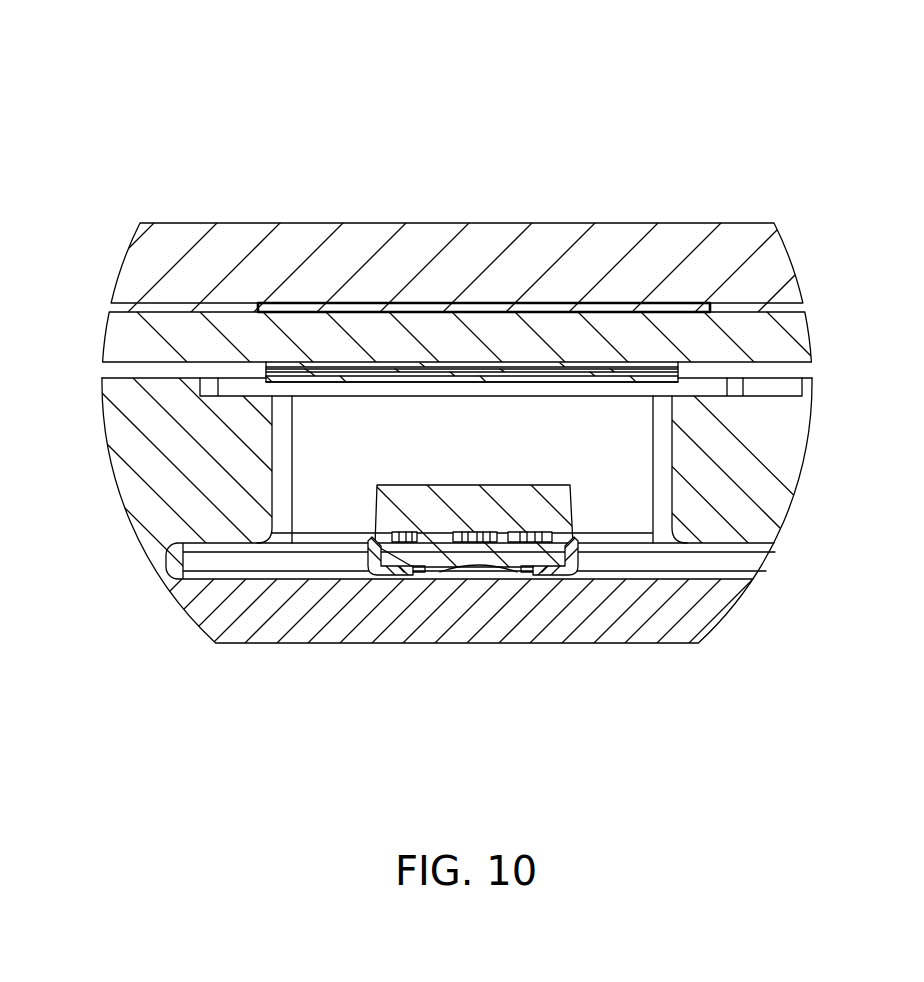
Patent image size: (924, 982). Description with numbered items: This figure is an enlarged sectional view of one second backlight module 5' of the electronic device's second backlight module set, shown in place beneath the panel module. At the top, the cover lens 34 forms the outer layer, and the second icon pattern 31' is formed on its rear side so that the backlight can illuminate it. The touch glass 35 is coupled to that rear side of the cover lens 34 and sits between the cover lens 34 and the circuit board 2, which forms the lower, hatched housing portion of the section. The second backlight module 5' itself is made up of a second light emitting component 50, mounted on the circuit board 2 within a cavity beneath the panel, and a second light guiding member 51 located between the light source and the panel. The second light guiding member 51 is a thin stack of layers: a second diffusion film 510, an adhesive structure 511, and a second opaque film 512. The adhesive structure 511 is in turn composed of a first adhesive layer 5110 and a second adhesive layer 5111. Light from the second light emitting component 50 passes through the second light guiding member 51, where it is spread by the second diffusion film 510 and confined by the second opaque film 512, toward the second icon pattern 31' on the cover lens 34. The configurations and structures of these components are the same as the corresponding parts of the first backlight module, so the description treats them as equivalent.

The second backlight module 5' is at (462, 366).
The cover lens 34 is at (757, 237).
The touch glass 35 is at (733, 318).
The second icon pattern 31' is at (484, 234).
The second light guiding member 51 is at (563, 100).
The second opaque film 512 is at (537, 368).
The adhesive structure 511 is at (495, 152).
The first adhesive layer 5110 is at (368, 377).
The second adhesive layer 5111 is at (453, 365).
The second diffusion film 510 is at (293, 378).
The circuit board 2 is at (655, 633).
The second light emitting component 50 is at (487, 490).